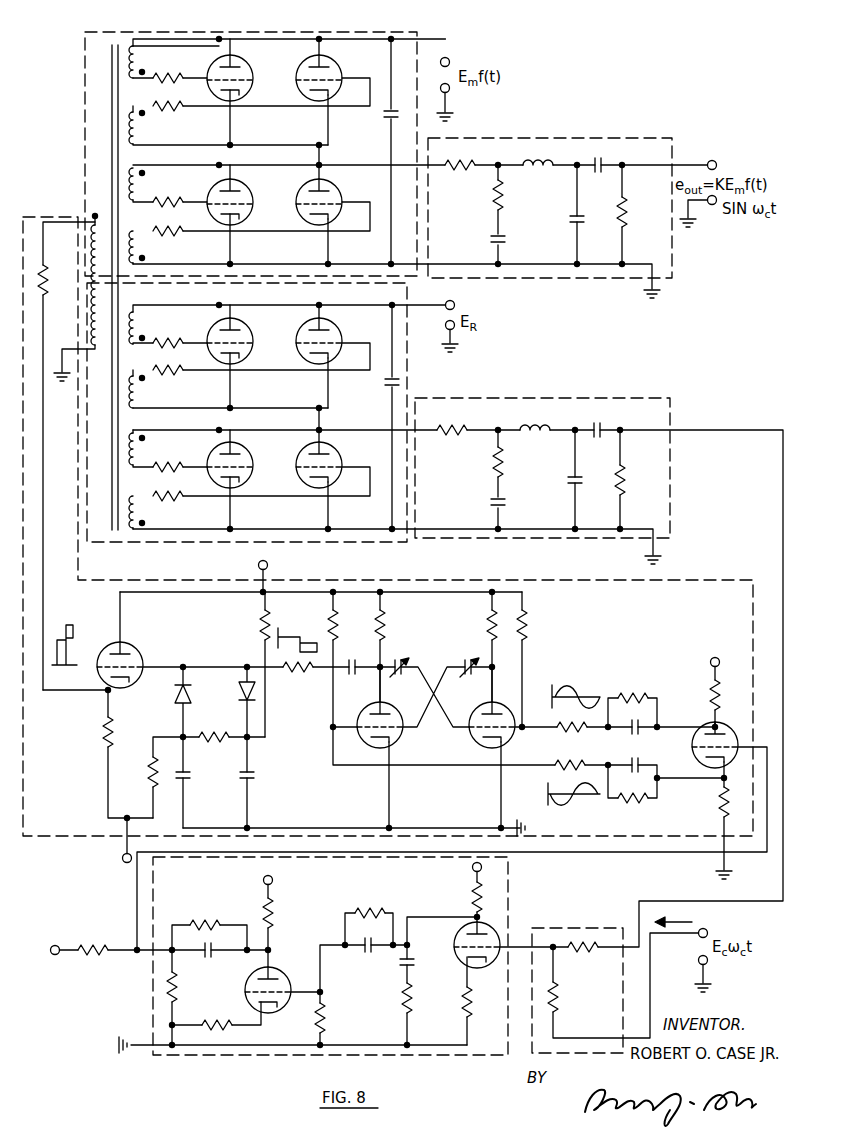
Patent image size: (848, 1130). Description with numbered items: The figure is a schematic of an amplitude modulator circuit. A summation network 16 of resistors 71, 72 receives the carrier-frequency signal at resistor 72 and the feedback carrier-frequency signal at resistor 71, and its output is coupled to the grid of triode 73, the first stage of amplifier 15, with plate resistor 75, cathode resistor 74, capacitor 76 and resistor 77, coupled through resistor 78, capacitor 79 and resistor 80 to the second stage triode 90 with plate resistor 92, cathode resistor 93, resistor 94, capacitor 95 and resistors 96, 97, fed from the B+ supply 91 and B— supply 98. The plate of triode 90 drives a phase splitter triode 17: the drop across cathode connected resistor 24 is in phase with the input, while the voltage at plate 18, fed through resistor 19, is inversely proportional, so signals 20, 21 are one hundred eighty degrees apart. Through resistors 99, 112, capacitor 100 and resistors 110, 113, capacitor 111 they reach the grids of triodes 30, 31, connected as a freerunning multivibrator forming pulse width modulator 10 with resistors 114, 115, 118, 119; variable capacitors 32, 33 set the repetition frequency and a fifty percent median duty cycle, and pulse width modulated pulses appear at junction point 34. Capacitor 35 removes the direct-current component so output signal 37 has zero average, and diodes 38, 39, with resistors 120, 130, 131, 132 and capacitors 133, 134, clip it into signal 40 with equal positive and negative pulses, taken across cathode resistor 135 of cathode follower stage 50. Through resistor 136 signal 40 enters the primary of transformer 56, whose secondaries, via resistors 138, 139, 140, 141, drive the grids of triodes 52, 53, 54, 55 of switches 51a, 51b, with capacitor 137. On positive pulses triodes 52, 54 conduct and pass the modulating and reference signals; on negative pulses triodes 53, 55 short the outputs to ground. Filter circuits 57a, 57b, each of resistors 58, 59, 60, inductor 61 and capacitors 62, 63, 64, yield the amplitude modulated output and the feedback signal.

The switch 51a is at (104, 31).
The switch 51b is at (408, 352).
The filter circuit 57a is at (463, 139).
The filter circuit 57b is at (519, 399).
The pulse width modulator 10 is at (343, 581).
The amplifier 15 is at (508, 887).
The summation network 16 is at (564, 929).
The transformer 56 is at (90, 313).
The resistor 136 is at (47, 272).
The resistor 140 is at (162, 76).
The resistor 138 is at (178, 108).
The resistor 141 is at (163, 200).
The resistor 139 is at (178, 233).
The triode 54 is at (246, 71).
The triode 52 is at (337, 71).
The triode 55 is at (246, 195).
The triode 53 is at (337, 195).
The capacitor 137 is at (384, 116).
The resistor 58 is at (461, 172).
The resistor 59 is at (505, 198).
The inductor 61 is at (538, 171).
The capacitor 64 is at (597, 173).
The capacitor 62 is at (490, 241).
The capacitor 63 is at (579, 226).
The resistor 60 is at (630, 208).
The B+ supply 91 is at (268, 566).
The signal 40 is at (74, 633).
The cathode follower stage 50 is at (140, 656).
The cathode resistor 135 is at (105, 739).
The resistor 132 is at (149, 776).
The diode 39 is at (173, 696).
The diode 38 is at (237, 689).
The resistor 131 is at (212, 733).
The capacitor 134 is at (192, 774).
The capacitor 133 is at (257, 774).
The resistor 130 is at (258, 625).
The resistor 120 is at (300, 680).
The output signal 37 is at (298, 636).
The resistor 119 is at (338, 625).
The resistor 118 is at (390, 627).
The resistor 115 is at (485, 625).
The resistor 114 is at (527, 629).
The capacitor 35 is at (350, 660).
The junction point 34 is at (389, 661).
The variable capacitor 33 is at (418, 664).
The triode 31 is at (369, 706).
The triode 30 is at (476, 740).
The variable capacitor 32 is at (467, 677).
The signal 20 is at (557, 684).
The signal 21 is at (545, 790).
The resistor 112 is at (576, 735).
The resistor 99 is at (618, 694).
The capacitor 100 is at (640, 735).
The resistor 113 is at (562, 754).
The capacitor 111 is at (630, 758).
The resistor 110 is at (635, 803).
The resistor 19 is at (706, 695).
The plate 18 is at (723, 723).
The triode 17 is at (695, 754).
The cathode connected resistor 24 is at (722, 800).
The B— supply 98 is at (122, 858).
The resistor 97 is at (93, 940).
The resistor 94 is at (200, 918).
The capacitor 95 is at (213, 956).
The resistor 96 is at (178, 987).
The resistor 93 is at (207, 1021).
The triode 90 is at (249, 991).
The resistor 92 is at (274, 919).
The resistor 80 is at (330, 1019).
The resistor 78 is at (362, 910).
The capacitor 79 is at (365, 955).
The capacitor 76 is at (415, 971).
The resistor 77 is at (403, 1003).
The resistor 75 is at (474, 899).
The triode 73 is at (458, 944).
The resistor 74 is at (460, 1006).
The resistor 71 is at (580, 953).
The resistor 72 is at (568, 1004).